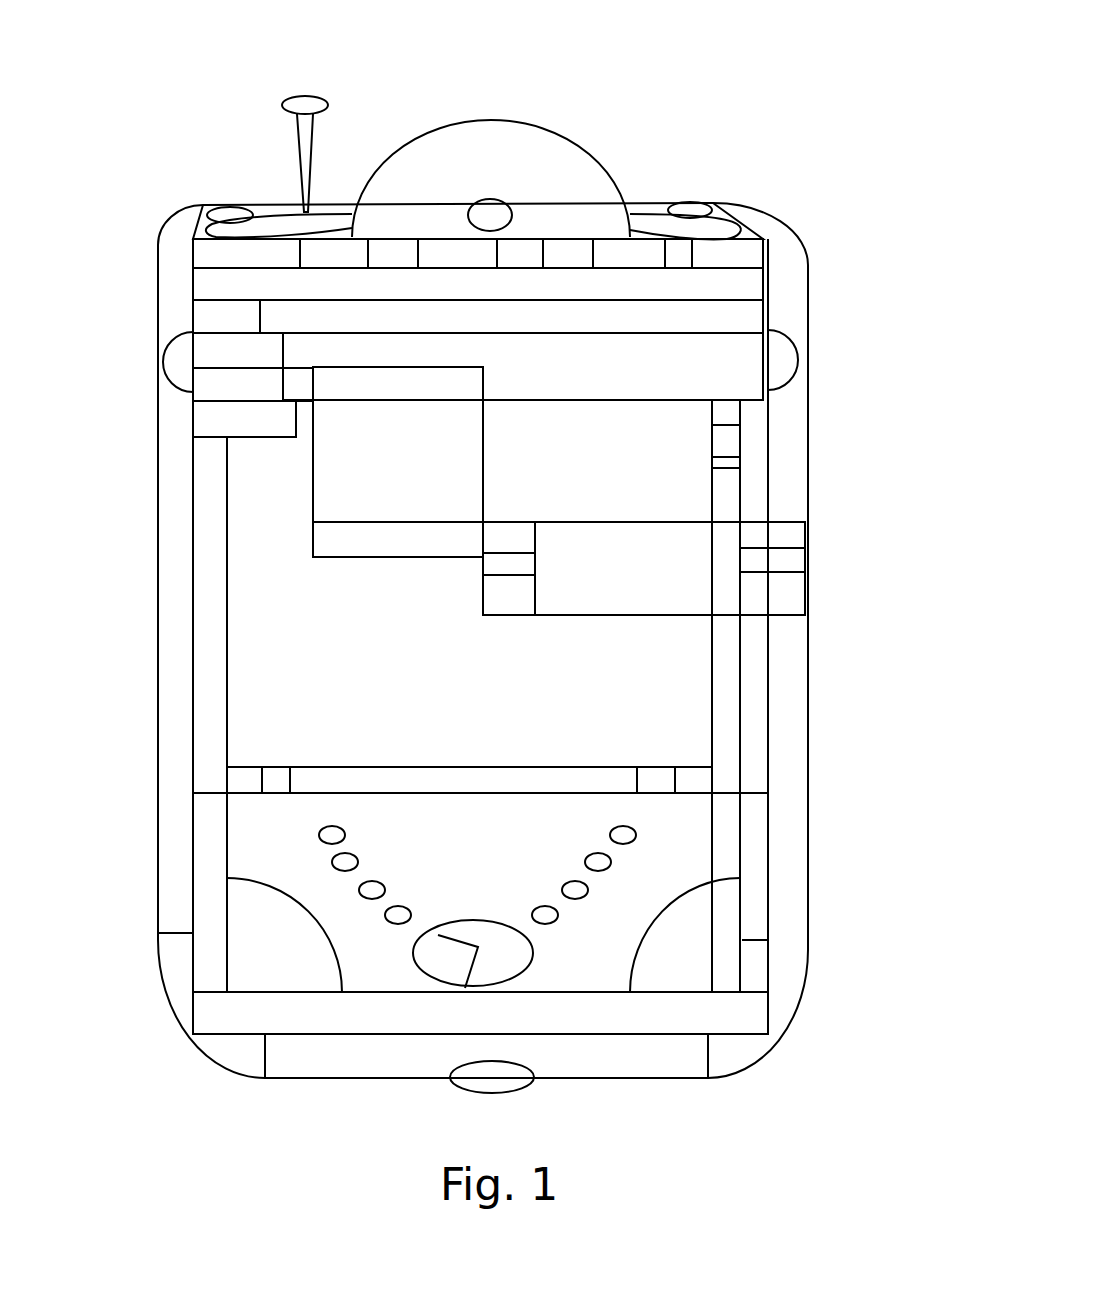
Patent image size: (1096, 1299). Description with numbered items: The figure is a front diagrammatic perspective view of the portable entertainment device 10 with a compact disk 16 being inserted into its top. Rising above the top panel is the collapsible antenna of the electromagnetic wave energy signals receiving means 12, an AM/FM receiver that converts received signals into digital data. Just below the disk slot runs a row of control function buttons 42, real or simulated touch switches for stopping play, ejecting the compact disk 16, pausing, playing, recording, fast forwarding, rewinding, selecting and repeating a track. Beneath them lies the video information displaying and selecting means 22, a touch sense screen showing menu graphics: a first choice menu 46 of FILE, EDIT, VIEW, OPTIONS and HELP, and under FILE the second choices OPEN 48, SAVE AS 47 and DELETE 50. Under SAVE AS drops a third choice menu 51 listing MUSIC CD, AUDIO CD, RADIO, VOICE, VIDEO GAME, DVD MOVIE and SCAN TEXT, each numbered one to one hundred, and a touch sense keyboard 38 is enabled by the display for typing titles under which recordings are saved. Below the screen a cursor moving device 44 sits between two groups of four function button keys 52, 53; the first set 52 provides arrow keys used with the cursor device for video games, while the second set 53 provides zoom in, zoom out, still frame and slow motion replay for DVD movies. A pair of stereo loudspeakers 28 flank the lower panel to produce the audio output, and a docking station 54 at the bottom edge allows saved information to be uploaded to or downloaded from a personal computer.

The portable entertainment device 10 is at (740, 127).
The electromagnetic wave energy signals receiving means 12 is at (303, 137).
The compact disk 16 is at (533, 153).
The video information displaying and selecting means 22 is at (263, 498).
The stereo loudspeakers 28 is at (235, 925).
The touch sense keyboard 38 is at (435, 560).
The control function buttons 42 is at (200, 263).
The cursor moving device 44 is at (494, 940).
The first choice menu 46 is at (193, 322).
The SAVE AS option 47 is at (200, 397).
The OPEN option 48 is at (200, 358).
The DELETE option 50 is at (200, 433).
The third choice menu 51 is at (318, 500).
The first set of function button keys 52 is at (340, 862).
The second set of function button keys 53 is at (607, 863).
The docking station 54 is at (508, 1078).